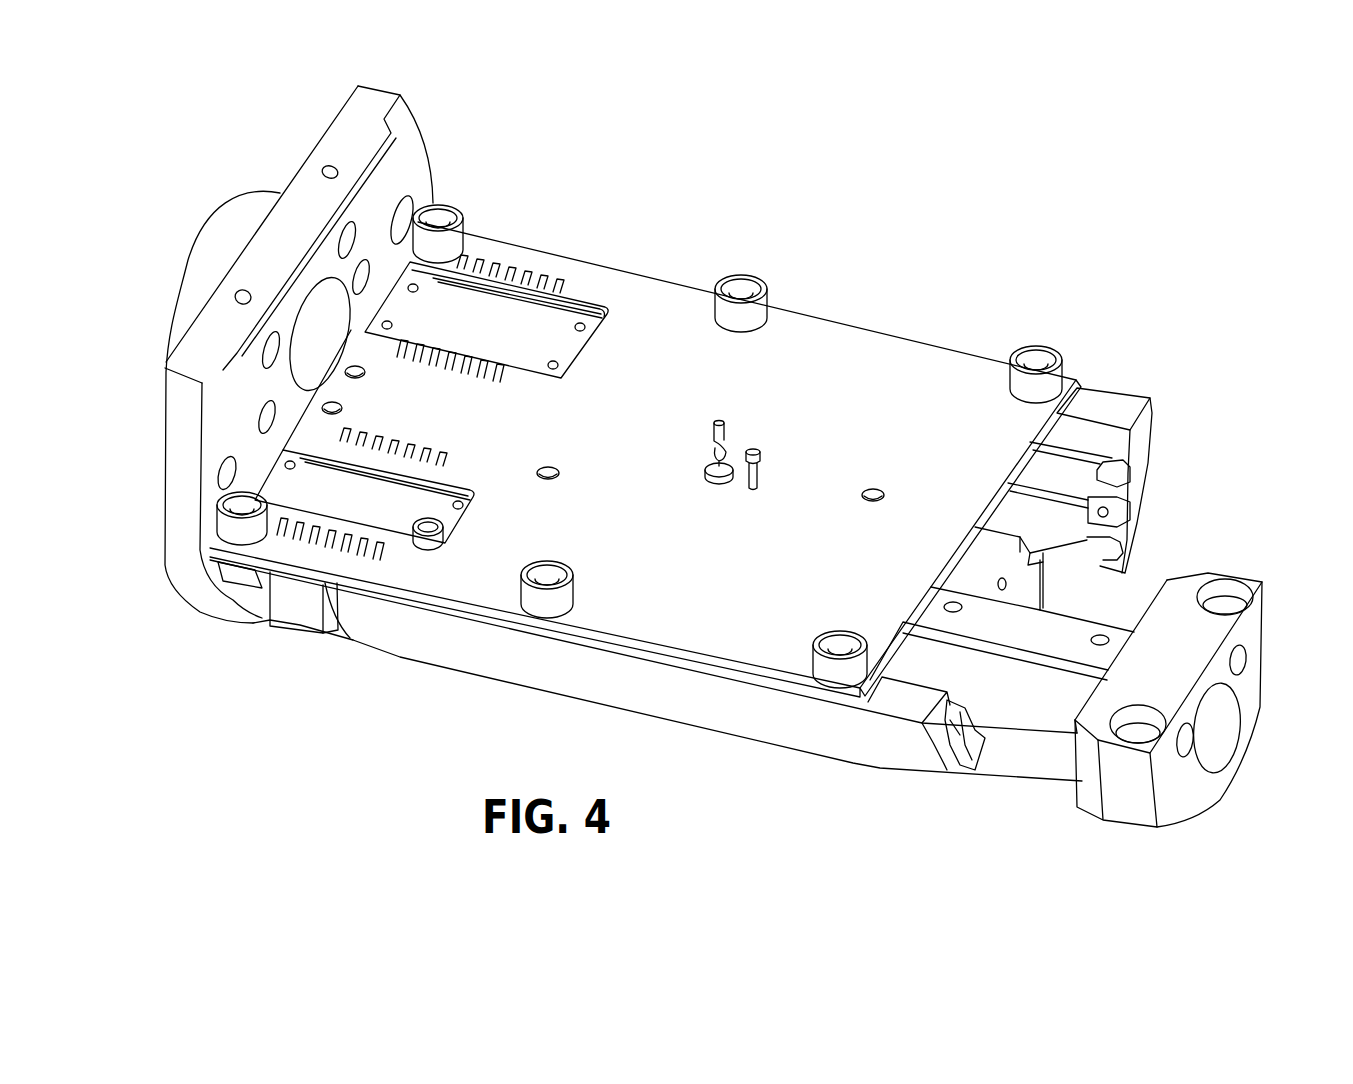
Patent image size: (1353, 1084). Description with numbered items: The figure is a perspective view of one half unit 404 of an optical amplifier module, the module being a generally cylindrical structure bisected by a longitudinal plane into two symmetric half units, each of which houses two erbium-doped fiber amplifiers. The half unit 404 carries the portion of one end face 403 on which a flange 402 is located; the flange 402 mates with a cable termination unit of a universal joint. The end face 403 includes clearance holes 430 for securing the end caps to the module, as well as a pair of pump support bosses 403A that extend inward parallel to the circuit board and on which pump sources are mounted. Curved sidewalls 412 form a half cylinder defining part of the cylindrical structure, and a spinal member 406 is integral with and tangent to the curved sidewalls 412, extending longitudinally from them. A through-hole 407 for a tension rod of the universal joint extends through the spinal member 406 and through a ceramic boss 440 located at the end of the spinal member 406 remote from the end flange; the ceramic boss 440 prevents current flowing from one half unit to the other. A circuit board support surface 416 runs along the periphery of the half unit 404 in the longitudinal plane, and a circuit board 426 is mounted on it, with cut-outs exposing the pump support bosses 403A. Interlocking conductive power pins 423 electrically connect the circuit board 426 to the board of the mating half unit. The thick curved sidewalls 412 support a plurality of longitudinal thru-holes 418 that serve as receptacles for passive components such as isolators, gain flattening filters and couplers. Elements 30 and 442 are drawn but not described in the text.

The hole 30 is at (222, 478).
The flange 402 is at (232, 220).
The end face 403 is at (407, 131).
The pump support boss 403A is at (532, 322).
The half unit 404 is at (710, 192).
The spinal member 406 is at (1052, 762).
The through-hole 407 is at (1210, 755).
The curved sidewall 412 is at (1077, 440).
The circuit board support surface 416 is at (1133, 402).
The thru-hole 418 is at (1080, 523).
The conductive power pin 423 is at (714, 434).
The circuit board 426 is at (868, 343).
The clearance hole 430 is at (413, 197).
The ceramic boss 440 is at (1130, 808).
The bushings 442 is at (463, 207).